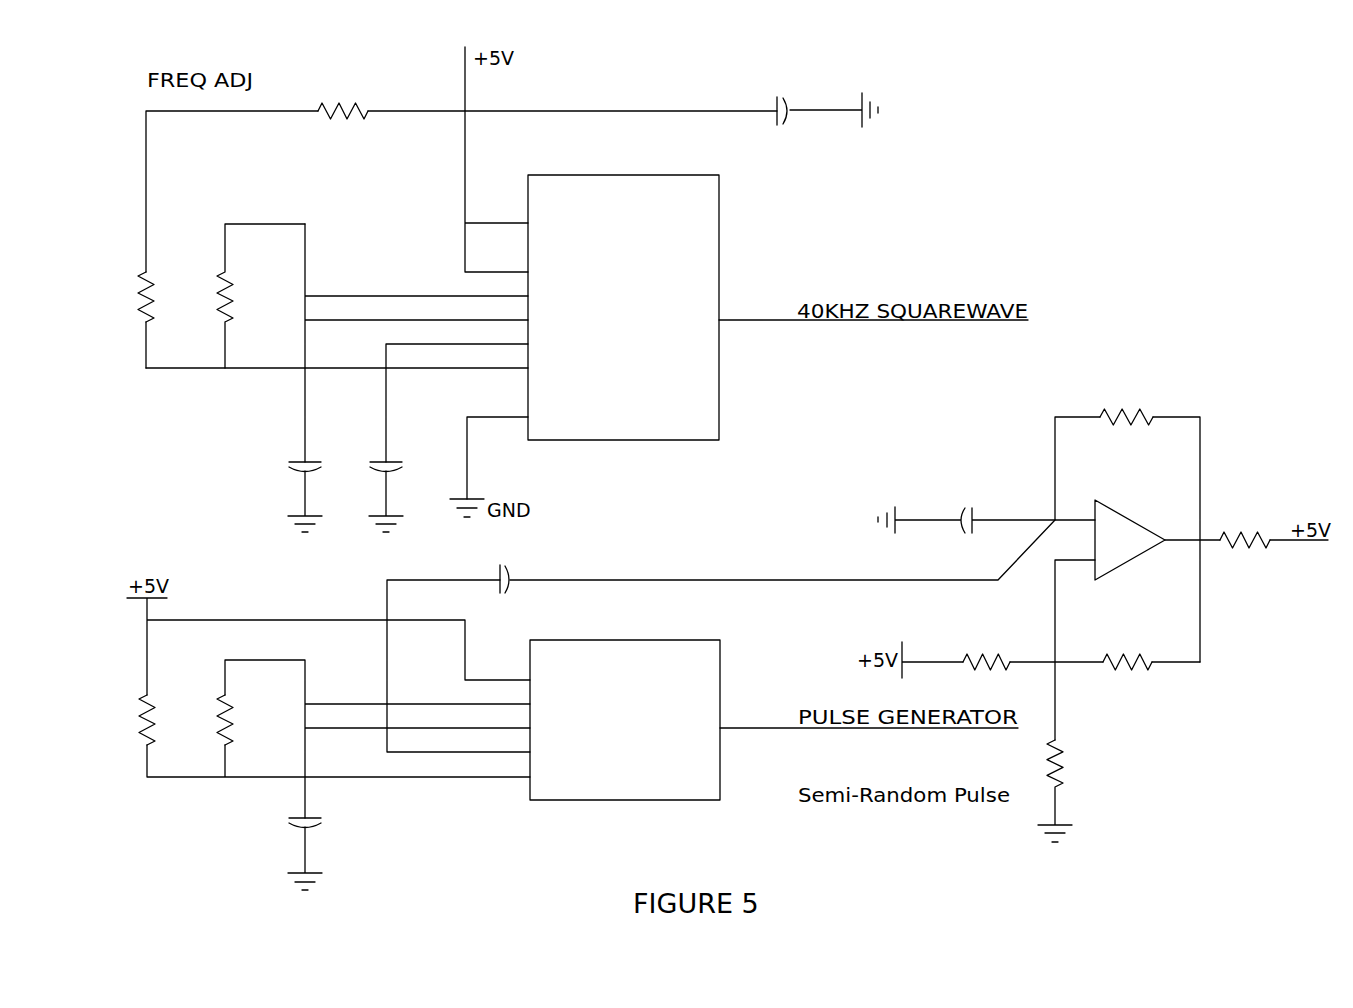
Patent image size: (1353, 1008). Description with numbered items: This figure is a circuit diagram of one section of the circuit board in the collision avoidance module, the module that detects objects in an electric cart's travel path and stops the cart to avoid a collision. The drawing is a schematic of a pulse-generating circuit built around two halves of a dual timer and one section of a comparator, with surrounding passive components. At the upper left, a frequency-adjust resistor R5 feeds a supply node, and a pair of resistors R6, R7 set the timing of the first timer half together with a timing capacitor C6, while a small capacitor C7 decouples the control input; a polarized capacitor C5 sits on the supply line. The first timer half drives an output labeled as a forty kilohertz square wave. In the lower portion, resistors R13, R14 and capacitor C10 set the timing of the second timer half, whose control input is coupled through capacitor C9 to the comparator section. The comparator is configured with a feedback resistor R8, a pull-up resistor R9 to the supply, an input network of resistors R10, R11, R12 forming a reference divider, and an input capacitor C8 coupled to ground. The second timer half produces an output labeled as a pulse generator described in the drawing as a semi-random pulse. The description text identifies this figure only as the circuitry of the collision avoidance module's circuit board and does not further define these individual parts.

The resistor 1k 1% R5 is at (339, 113).
The resistor 4.7k 1% R6 is at (166, 297).
The resistor 15k 1% R7 is at (261, 296).
The resistor 15k R8 is at (1126, 418).
The resistor 10k R9 is at (1245, 540).
The resistor 15k R10 is at (986, 661).
The resistor 20k R11 is at (1127, 661).
The resistor 15K R12 is at (1072, 791).
The resistor 330k R13 is at (171, 720).
The resistor 5.6k R14 is at (247, 720).
The capacitor 1uf C5 is at (819, 111).
The capacitor 820pF 5% C6 is at (275, 482).
The capacitor .1uF C7 is at (406, 487).
The capacitor 1uF C8 is at (966, 522).
The capacitor .1uf C9 is at (500, 579).
The capacitor .1uF C10 is at (326, 845).